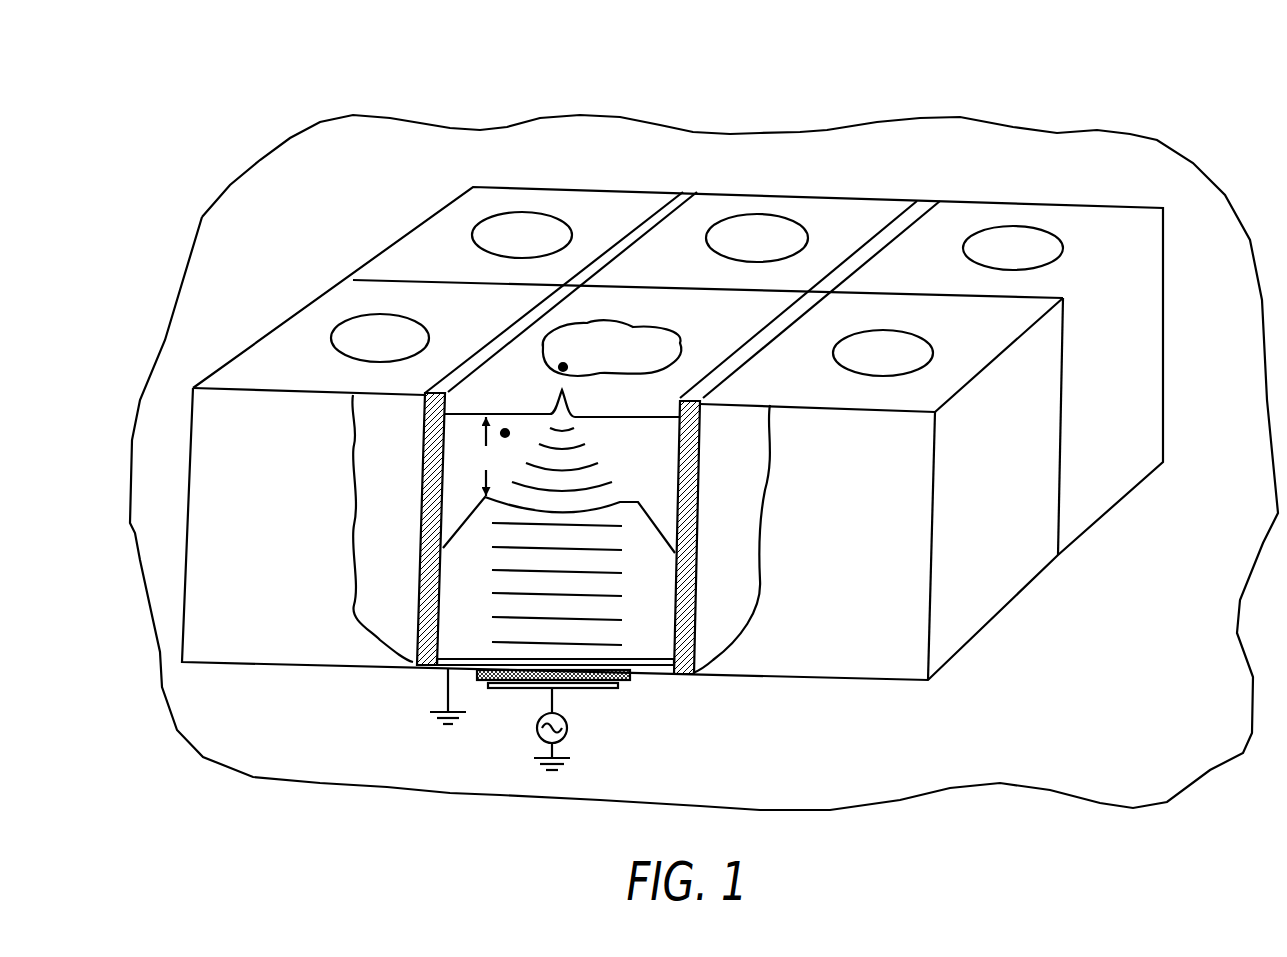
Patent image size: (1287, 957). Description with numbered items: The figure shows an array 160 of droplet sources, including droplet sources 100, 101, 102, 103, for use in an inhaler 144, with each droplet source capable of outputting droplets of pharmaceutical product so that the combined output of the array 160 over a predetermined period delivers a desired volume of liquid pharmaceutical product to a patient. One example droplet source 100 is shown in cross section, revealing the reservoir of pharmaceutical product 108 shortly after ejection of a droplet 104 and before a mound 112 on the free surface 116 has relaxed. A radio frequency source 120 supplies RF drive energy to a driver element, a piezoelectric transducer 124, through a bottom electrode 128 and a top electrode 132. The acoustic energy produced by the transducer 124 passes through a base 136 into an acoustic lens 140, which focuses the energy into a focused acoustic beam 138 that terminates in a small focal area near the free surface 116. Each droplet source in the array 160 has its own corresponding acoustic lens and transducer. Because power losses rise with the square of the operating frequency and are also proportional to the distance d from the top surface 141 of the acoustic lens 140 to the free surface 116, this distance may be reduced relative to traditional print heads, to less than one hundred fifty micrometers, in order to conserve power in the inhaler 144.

The droplet source 100 is at (650, 342).
The droplet source 101 is at (887, 357).
The droplet source 102 is at (1013, 247).
The droplet source 103 is at (757, 232).
The droplet 104 is at (563, 367).
The reservoir of pharmaceutical product 108 is at (505, 433).
The mound 112 is at (577, 399).
The free surface 116 is at (530, 406).
The radio frequency source 120 is at (568, 743).
The piezoelectric transducer 124 is at (630, 687).
The bottom electrode 128 is at (588, 690).
The top electrode 132 is at (657, 673).
The base 136 is at (470, 657).
The focused acoustic beam 138 is at (580, 460).
The acoustic lens 140 is at (603, 506).
The top surface of acoustic lens 141 is at (473, 497).
The inhaler 144 is at (380, 113).
The array of droplet sources 160 is at (642, 153).